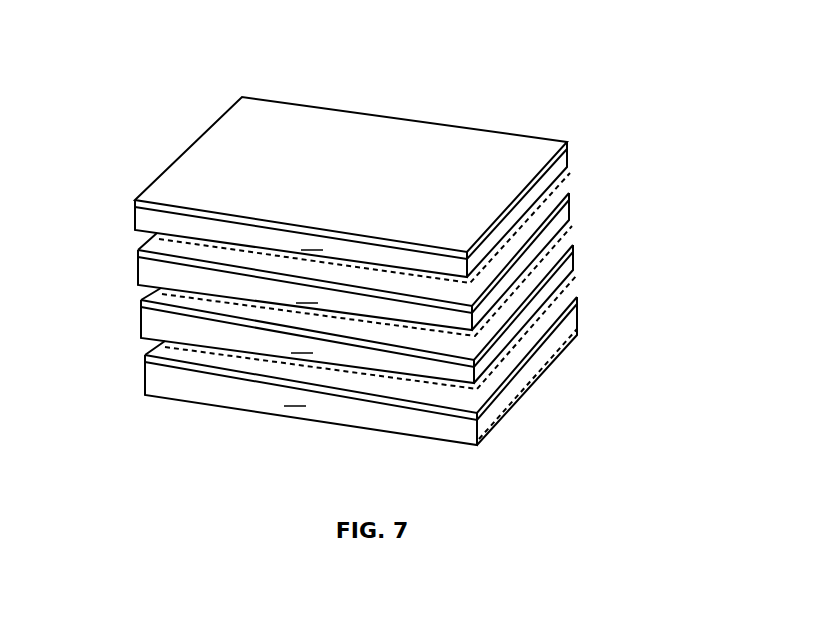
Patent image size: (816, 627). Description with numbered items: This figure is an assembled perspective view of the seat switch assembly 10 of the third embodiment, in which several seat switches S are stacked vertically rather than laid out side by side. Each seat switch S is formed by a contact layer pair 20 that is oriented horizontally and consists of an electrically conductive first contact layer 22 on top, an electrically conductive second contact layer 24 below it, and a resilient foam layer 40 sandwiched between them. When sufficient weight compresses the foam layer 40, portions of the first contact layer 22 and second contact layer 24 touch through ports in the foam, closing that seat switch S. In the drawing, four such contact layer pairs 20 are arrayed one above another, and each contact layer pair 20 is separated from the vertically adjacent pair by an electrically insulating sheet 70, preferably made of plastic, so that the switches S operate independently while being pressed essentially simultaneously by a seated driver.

The seat switch assembly 10 is at (598, 82).
The contact layer pair 20 is at (419, 256).
The first contact layer 22 is at (377, 243).
The second contact layer 24 is at (388, 293).
The foam layer 40 is at (303, 320).
The electrically insulating sheet 70 is at (371, 330).
The seat switch S is at (120, 215).